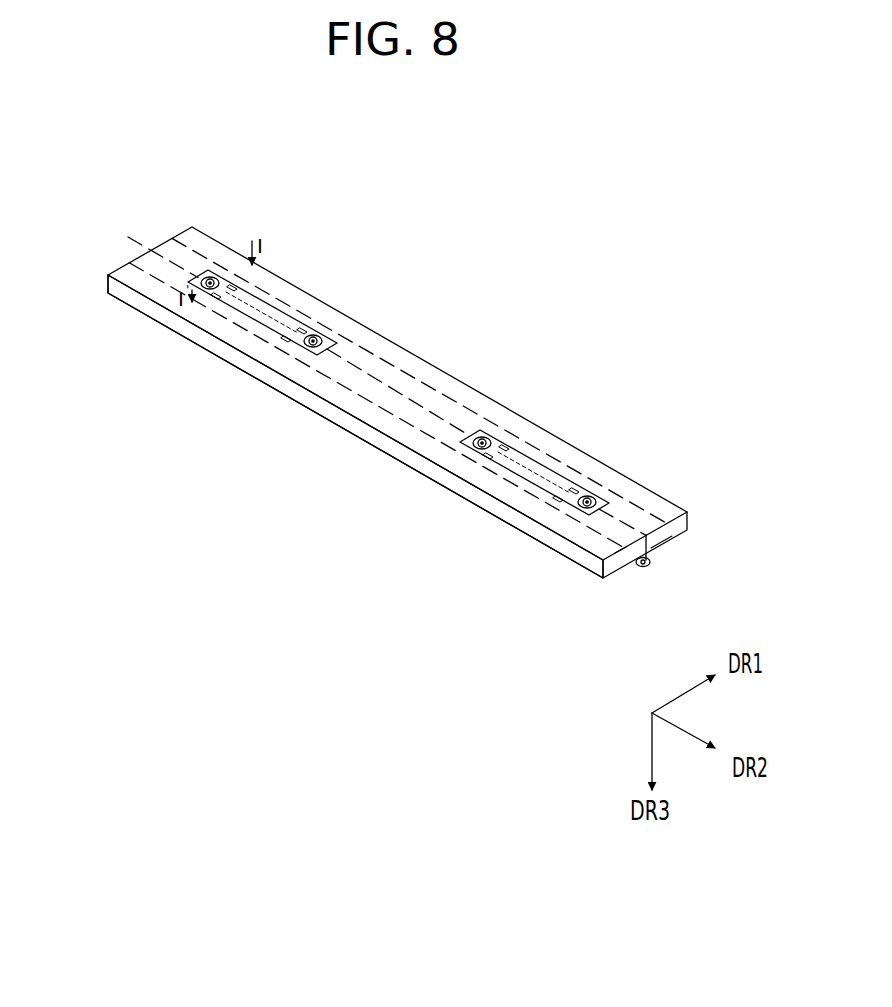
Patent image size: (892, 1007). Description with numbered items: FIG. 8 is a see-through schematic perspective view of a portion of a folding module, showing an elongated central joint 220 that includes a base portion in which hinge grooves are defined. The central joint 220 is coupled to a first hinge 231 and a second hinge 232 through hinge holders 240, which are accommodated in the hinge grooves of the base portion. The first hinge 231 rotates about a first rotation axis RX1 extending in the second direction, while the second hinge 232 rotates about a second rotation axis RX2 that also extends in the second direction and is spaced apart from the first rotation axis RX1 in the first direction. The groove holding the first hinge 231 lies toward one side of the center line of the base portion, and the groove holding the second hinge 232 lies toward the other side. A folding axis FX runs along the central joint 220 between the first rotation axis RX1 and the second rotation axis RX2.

The central joint 220 is at (638, 518).
The first hinge 231 is at (435, 378).
The second hinge 232 is at (320, 405).
The hinge holder 240 is at (325, 339).
The first rotation axis RX1 is at (272, 321).
The second rotation axis RX2 is at (523, 468).
The folding axis FX is at (373, 378).